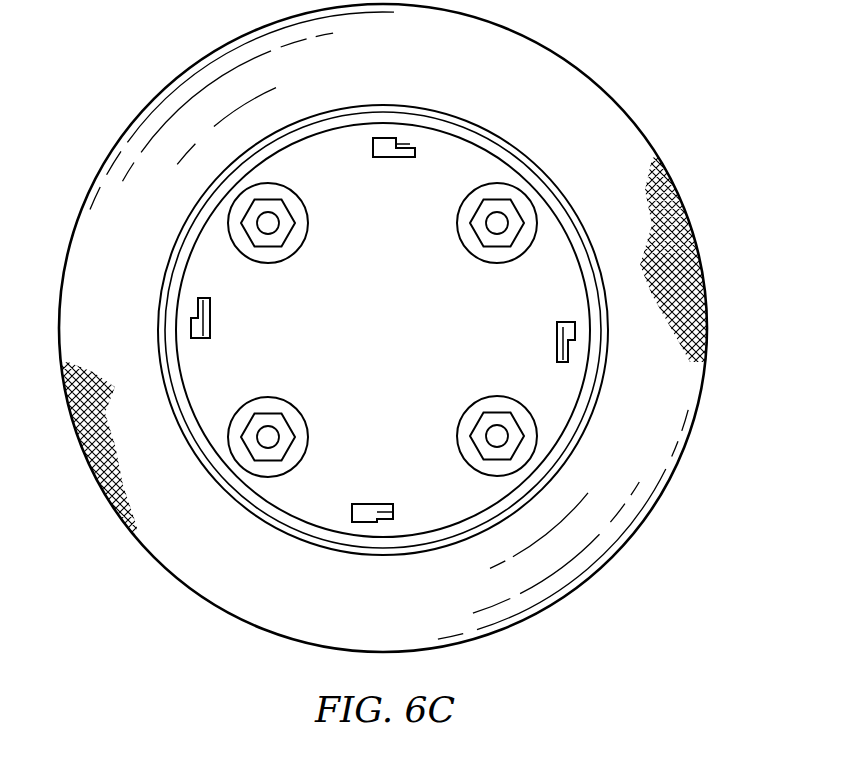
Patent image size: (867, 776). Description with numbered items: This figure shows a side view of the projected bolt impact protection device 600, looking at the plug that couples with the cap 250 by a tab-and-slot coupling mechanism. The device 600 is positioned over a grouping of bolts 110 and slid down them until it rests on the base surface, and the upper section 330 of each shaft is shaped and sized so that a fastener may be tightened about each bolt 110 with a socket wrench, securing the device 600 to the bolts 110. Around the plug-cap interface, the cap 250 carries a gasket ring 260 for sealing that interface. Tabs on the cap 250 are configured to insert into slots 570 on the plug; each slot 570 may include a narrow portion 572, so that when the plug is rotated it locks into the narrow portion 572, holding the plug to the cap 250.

The projected bolt impact protection device 600 is at (150, 58).
The cap 250 is at (577, 70).
The gasket ring 260 is at (223, 488).
The upper section 330 is at (294, 255).
The bolt 110 is at (287, 220).
The slot 570 is at (372, 158).
The narrow portion 572 is at (408, 138).